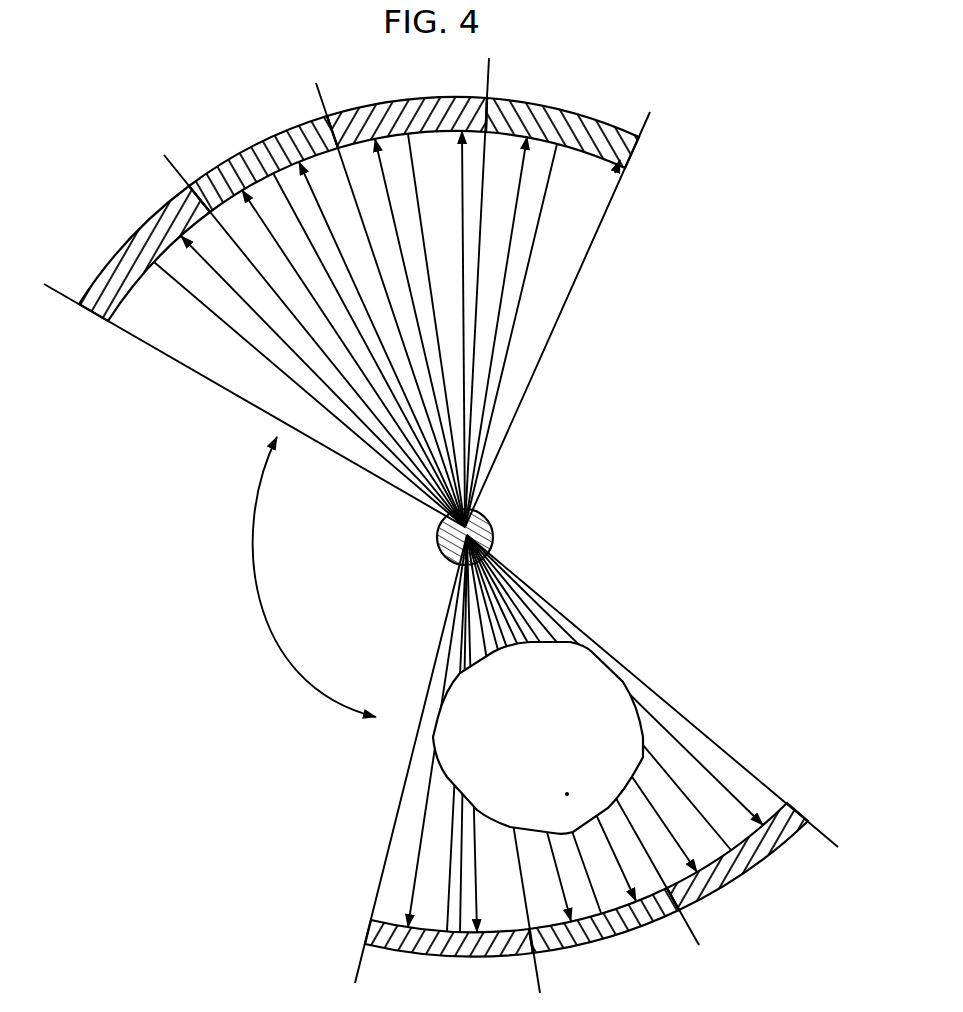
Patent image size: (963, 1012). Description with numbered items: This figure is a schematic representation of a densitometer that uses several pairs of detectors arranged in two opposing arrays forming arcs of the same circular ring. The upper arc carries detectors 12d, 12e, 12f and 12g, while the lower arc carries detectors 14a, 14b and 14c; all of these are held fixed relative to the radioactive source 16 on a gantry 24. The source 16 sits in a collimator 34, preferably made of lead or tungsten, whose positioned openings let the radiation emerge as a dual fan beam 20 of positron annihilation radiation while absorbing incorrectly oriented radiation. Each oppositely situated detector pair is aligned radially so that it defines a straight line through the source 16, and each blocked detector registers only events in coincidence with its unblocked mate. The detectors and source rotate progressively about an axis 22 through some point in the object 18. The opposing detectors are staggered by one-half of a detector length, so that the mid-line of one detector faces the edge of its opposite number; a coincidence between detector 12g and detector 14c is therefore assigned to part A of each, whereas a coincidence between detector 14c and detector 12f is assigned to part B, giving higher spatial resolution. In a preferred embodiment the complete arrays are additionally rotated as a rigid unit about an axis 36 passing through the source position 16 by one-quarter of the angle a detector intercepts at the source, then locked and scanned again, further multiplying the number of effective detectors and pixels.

The detector 12d is at (649, 114).
The detector 12e is at (488, 73).
The detector 12f is at (319, 92).
The detector 12g is at (173, 167).
The detector 14a is at (538, 983).
The detector 14b is at (694, 937).
The detector 14c is at (831, 840).
The radioactive source 16 is at (486, 526).
The object 18 is at (545, 706).
The dual fan beam 20 is at (306, 577).
The axis 22 is at (565, 792).
The gantry 24 is at (545, 901).
The collimator 34 is at (434, 534).
The axis 36 is at (492, 526).